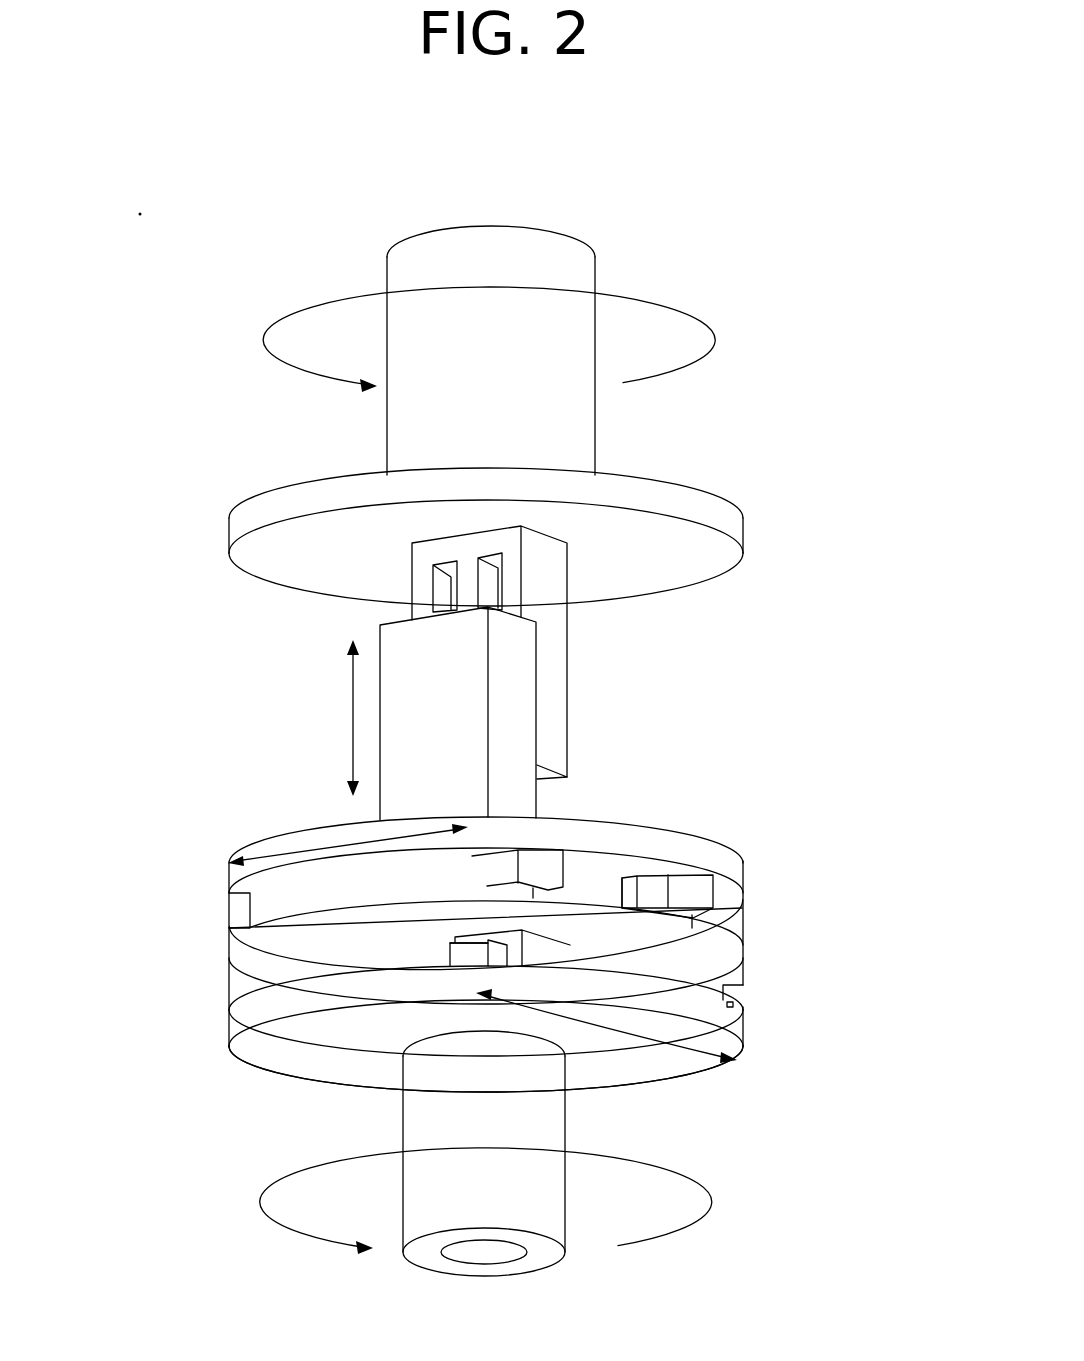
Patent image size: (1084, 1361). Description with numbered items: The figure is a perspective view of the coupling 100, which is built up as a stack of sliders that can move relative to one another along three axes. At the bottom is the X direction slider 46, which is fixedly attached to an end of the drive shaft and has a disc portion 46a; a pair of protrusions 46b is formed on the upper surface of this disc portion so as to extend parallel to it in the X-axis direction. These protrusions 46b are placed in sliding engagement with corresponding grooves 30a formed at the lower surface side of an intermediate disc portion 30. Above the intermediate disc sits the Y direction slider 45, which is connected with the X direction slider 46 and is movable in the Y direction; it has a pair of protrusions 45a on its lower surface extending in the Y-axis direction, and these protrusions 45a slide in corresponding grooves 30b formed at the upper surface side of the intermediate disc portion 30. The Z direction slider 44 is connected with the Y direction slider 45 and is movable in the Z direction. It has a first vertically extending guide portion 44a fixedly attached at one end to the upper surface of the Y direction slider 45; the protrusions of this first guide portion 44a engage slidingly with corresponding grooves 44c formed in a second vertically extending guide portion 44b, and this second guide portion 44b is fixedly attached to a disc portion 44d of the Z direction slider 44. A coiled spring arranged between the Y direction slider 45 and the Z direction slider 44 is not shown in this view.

The coupling 100 is at (766, 384).
The Z direction slider 44 is at (608, 684).
The first vertically extending guide portion 44a is at (542, 797).
The second vertically extending guide portion 44b is at (568, 621).
The grooves 44c is at (490, 588).
The disc portion 44d is at (253, 512).
The Y direction slider 45 is at (698, 838).
The protrusions 45a is at (626, 890).
The intermediate disc portion 30 is at (228, 948).
The grooves 30a is at (240, 978).
The grooves 30b is at (672, 892).
The X direction slider 46 is at (743, 1035).
The disc portion 46a is at (712, 1088).
The protrusions 46b is at (470, 957).